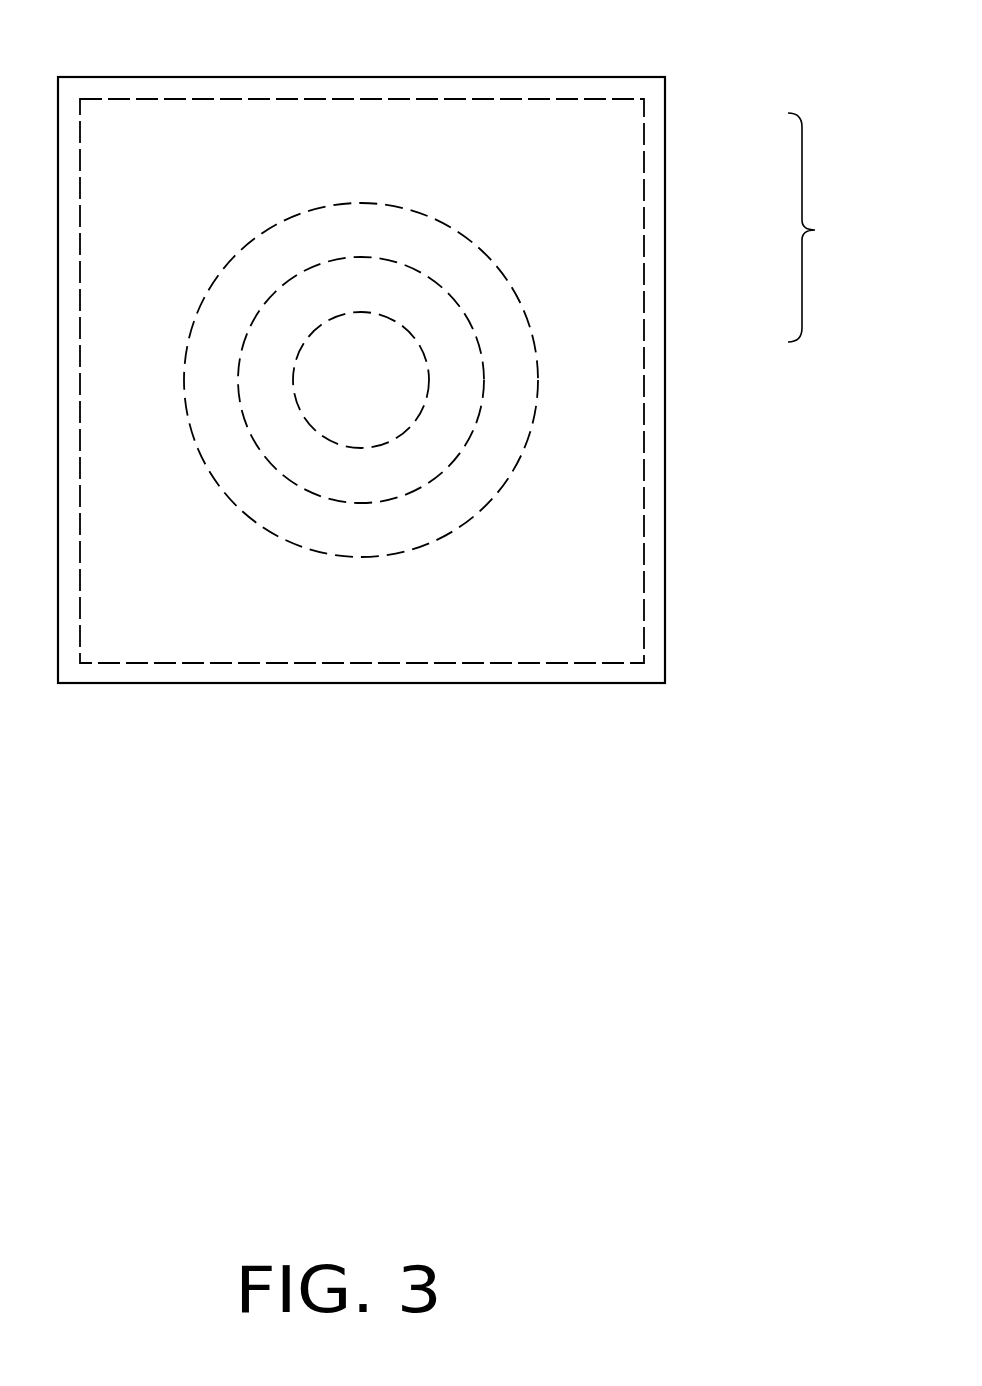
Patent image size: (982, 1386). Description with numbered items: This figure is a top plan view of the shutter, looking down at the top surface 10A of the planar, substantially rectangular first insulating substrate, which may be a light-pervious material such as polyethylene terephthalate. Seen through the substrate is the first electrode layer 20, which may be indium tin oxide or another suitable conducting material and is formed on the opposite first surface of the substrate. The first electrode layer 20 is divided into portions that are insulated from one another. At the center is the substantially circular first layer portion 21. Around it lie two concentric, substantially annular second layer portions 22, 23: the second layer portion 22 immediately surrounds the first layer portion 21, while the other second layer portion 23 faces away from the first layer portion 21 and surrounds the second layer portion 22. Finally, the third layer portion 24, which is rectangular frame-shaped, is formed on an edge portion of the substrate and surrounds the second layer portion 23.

The top surface 10A is at (323, 147).
The first electrode layer 20 is at (825, 227).
The first layer portion 21 is at (398, 348).
The second layer portion 22 is at (407, 295).
The second layer portion 23 is at (507, 365).
The third layer portion 24 is at (657, 122).